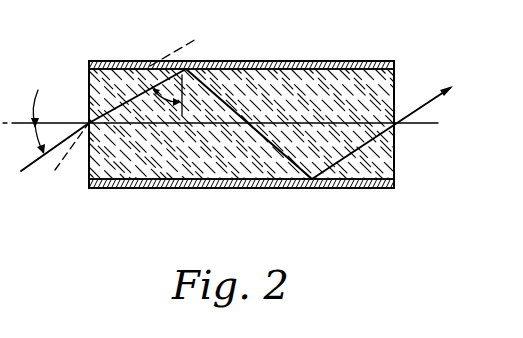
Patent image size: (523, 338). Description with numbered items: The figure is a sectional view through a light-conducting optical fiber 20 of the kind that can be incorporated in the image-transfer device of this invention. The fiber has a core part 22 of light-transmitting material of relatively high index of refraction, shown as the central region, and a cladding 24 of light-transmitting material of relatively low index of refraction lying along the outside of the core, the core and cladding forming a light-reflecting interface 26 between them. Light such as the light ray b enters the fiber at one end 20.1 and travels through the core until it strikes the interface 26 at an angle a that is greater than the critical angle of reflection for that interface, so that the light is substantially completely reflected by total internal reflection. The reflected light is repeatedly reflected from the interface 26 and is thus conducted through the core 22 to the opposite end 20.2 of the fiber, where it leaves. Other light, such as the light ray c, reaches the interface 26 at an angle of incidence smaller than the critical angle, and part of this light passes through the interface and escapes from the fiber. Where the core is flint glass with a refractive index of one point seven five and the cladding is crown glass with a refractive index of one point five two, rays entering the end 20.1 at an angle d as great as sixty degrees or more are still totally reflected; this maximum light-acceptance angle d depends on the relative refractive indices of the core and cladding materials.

The light-conducting optical fiber 20 is at (280, 58).
The fiber end 20.1 is at (88, 70).
The opposite end of the fiber 20.2 is at (395, 68).
The core part 22 is at (374, 181).
The cladding 24 is at (224, 186).
The light-reflecting interface 26 is at (339, 66).
The angle of incidence on the fiber interface a is at (178, 101).
The light ray b is at (32, 167).
The light ray c is at (55, 171).
The light-acceptance angle d is at (46, 87).